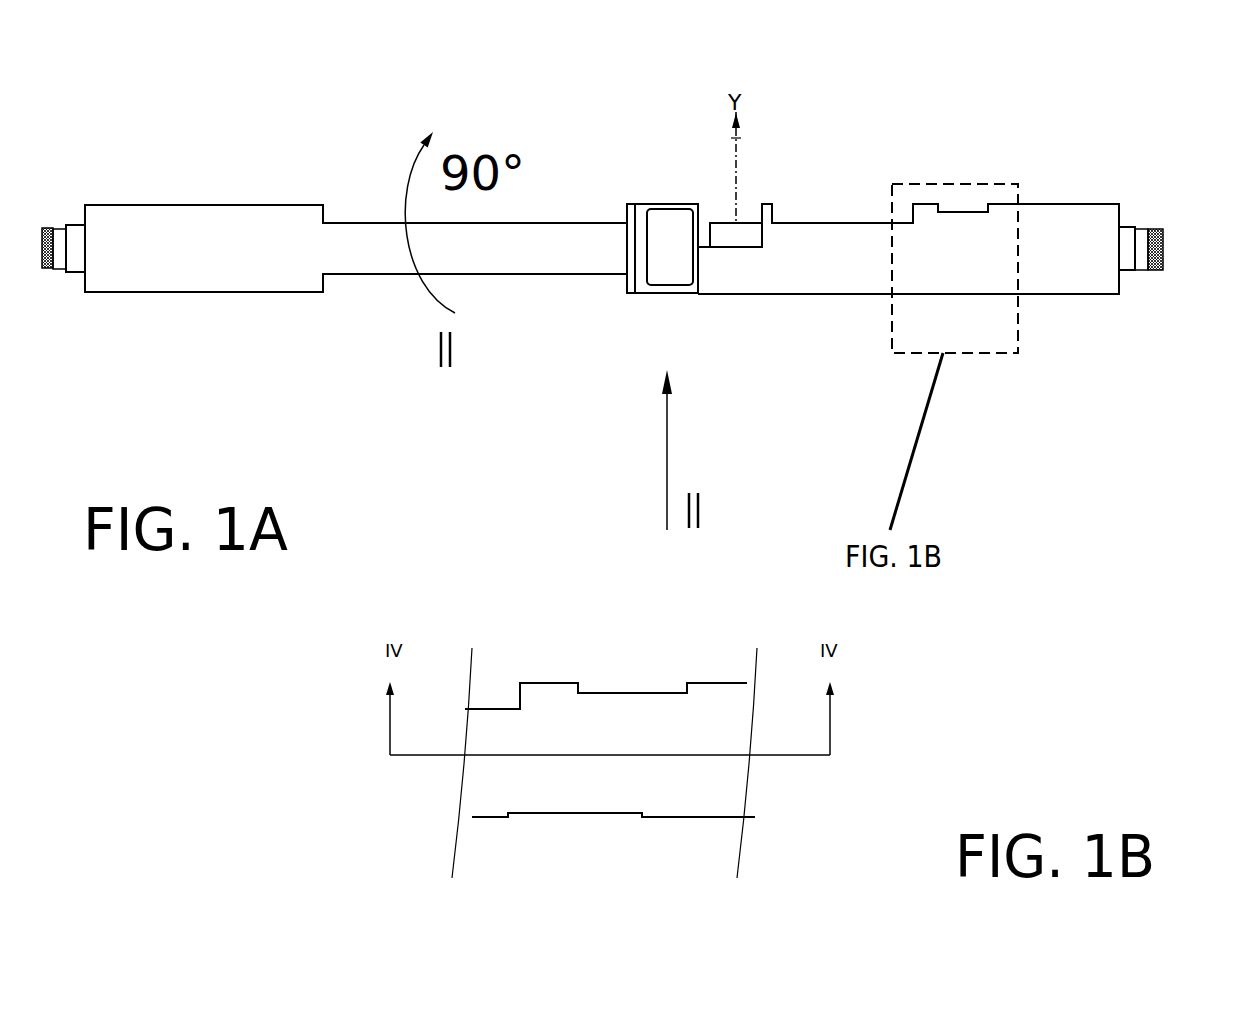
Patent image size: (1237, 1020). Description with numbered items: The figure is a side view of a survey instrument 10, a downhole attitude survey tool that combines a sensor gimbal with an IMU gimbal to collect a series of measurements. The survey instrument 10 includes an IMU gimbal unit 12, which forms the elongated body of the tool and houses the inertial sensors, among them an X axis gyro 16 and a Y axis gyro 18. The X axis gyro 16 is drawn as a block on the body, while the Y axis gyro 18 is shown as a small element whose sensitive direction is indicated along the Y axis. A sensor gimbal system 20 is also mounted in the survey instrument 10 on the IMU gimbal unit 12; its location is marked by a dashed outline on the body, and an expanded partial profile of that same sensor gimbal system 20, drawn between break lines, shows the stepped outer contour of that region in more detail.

In FIG. 1A, the survey instrument 10 is at (646, 102).
In FIG. 1A, the IMU gimbal unit 12 is at (362, 222).
In FIG. 1A, the X axis gyro 16 is at (667, 245).
In FIG. 1A, the Y axis gyro 18 is at (752, 222).
In FIG. 1A, the sensor gimbal system 20 is at (970, 142).
In FIG. 1B, the sensor gimbal system 20 is at (524, 577).